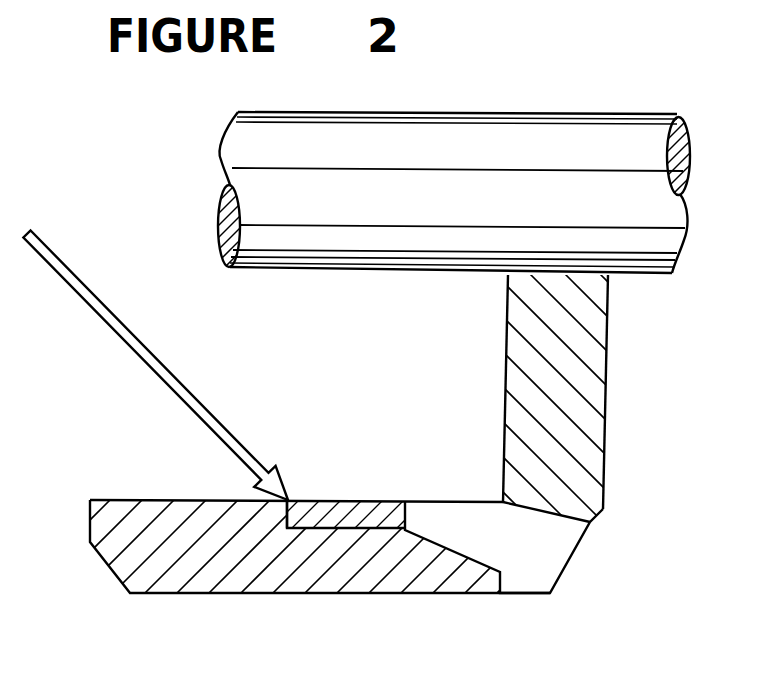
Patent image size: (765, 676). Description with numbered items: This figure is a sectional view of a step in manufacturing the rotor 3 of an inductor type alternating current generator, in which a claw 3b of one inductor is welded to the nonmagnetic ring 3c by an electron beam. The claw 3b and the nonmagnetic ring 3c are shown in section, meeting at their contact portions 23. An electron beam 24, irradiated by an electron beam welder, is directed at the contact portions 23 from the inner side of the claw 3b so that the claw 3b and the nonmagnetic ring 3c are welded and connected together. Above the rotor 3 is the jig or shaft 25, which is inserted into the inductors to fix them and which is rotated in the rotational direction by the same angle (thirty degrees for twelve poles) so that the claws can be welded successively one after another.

The jig 25 is at (577, 148).
The electron beam 24 is at (182, 393).
The contact portions 23 is at (300, 500).
The rotor 3 is at (605, 415).
The second claws 3b is at (315, 567).
The nonmagnetic ring 3c is at (373, 518).